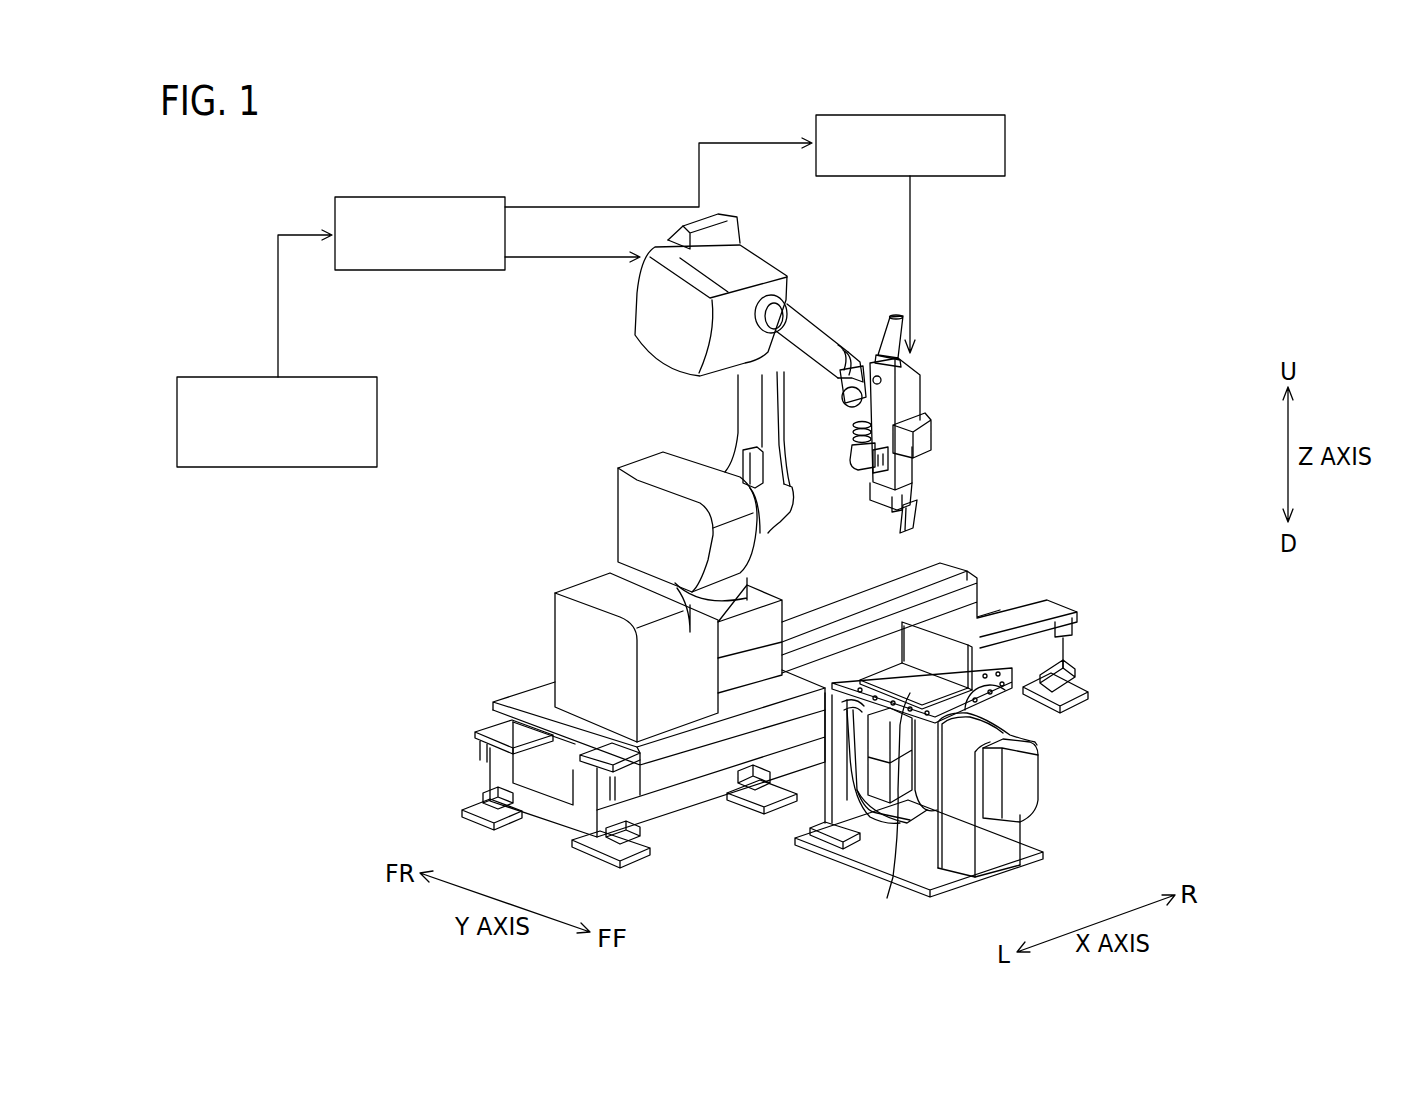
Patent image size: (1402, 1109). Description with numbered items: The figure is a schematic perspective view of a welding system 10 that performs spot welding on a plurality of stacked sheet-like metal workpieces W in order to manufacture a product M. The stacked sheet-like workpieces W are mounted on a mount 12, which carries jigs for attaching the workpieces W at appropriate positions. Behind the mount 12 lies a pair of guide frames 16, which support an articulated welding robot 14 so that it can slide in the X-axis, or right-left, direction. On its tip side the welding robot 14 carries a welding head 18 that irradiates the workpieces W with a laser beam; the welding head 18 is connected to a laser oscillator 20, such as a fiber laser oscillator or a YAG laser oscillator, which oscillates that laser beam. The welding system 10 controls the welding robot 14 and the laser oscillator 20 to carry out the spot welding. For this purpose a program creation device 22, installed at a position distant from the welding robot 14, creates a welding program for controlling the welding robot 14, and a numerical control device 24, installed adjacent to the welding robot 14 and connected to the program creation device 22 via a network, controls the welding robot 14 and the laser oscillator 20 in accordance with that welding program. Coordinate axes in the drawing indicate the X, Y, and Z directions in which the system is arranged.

The welding system 10 is at (1118, 311).
The mount 12 is at (1053, 783).
The articulated welding robot 14 is at (785, 267).
The guide frames 16 is at (1053, 612).
The welding head 18 is at (927, 398).
The laser oscillator 20 is at (1005, 142).
The program creation device 22 is at (228, 377).
The numerical control (NC) device 24 is at (415, 197).
The stacked sheet-like workpieces W is at (1012, 700).
The product M is at (894, 809).